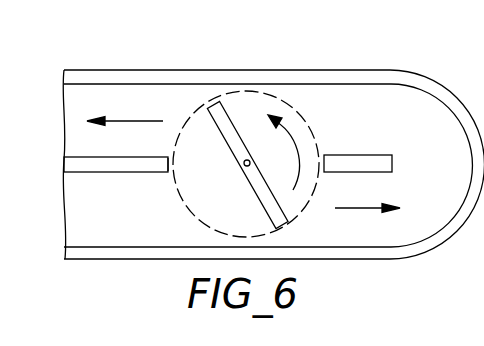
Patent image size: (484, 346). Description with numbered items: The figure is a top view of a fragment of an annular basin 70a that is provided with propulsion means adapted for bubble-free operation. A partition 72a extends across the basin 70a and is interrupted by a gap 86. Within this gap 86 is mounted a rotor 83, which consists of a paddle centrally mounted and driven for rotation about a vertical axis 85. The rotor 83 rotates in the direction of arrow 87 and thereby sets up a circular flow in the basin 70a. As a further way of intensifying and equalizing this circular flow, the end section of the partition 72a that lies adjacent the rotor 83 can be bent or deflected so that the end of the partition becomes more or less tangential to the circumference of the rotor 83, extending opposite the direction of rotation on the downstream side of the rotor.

The basin 70a is at (323, 83).
The partition 72a is at (96, 172).
The rotor 83 is at (276, 211).
The vertical axis 85 is at (244, 165).
The gap 86 is at (168, 164).
The arrow 87 is at (301, 152).